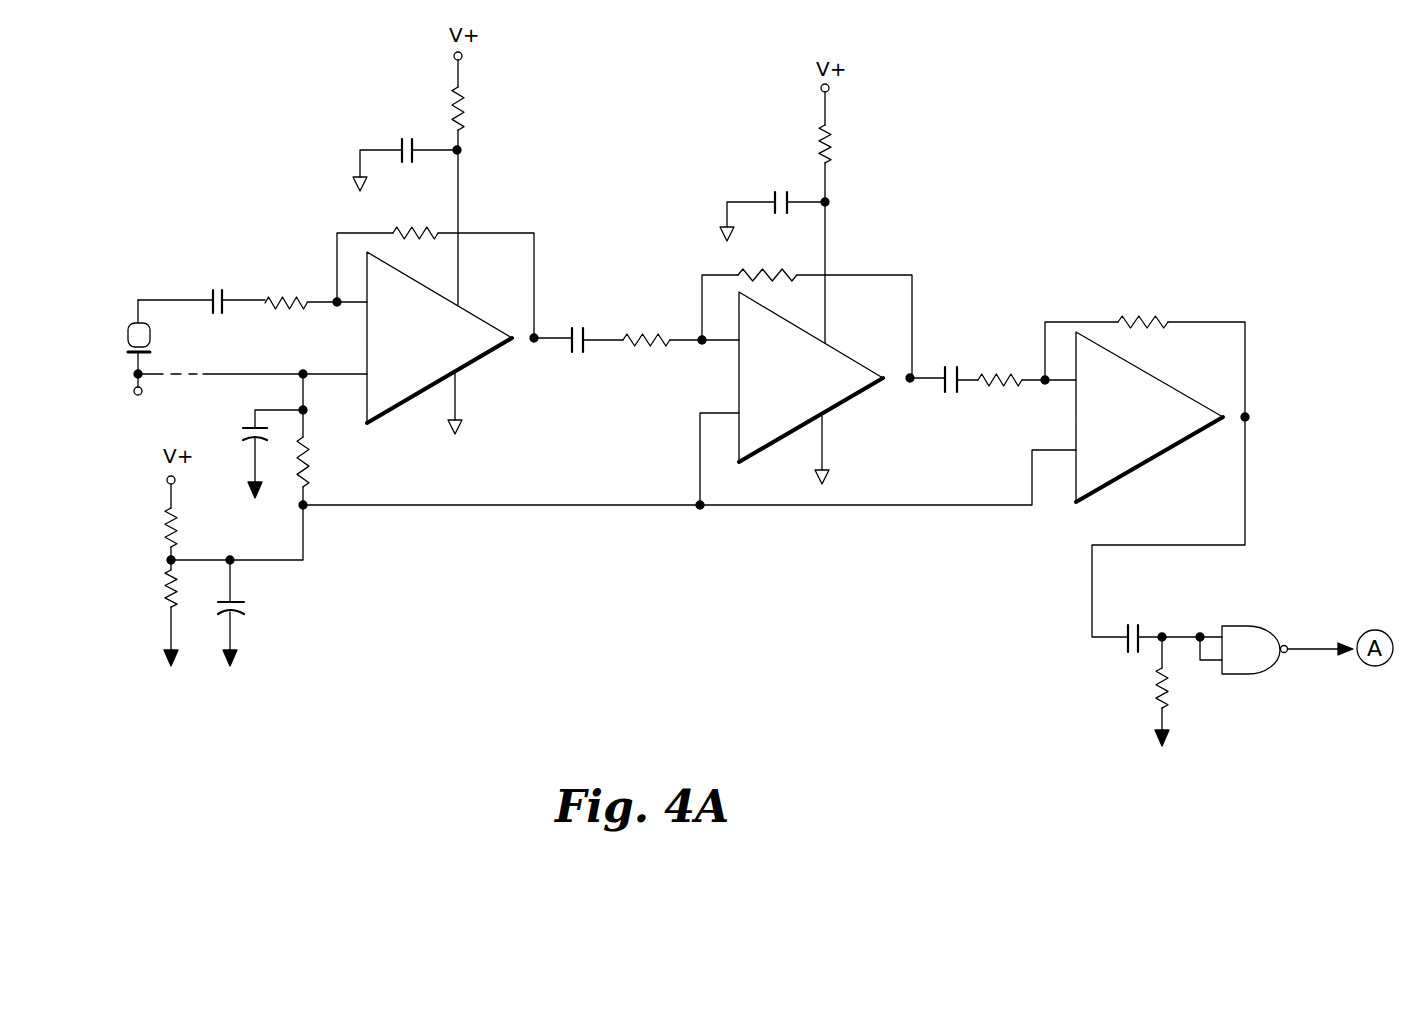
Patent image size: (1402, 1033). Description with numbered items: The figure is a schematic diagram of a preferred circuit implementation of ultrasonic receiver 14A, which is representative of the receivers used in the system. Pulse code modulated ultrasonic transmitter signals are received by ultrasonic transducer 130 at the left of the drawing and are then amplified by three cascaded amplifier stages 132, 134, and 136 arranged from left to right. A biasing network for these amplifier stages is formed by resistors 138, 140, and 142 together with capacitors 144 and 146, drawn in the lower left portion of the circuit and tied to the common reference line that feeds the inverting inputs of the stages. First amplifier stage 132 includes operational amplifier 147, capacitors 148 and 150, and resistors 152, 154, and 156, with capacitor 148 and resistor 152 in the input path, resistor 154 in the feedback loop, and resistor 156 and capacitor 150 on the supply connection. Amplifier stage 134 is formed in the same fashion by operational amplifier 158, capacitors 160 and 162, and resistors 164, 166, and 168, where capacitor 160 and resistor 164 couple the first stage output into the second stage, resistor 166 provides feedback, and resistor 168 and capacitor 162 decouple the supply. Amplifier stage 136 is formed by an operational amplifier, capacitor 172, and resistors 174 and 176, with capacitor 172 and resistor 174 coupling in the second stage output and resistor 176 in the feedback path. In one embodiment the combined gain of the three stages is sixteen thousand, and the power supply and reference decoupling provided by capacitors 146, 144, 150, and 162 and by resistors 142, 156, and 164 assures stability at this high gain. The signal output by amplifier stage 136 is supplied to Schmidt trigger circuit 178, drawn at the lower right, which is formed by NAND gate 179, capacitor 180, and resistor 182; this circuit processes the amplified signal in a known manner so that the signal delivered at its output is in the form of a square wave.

The ultrasonic receiver 14A is at (1002, 181).
The ultrasonic transducer 130 is at (124, 322).
The first amplifier stage 132 is at (457, 243).
The amplifier stage 134 is at (826, 296).
The amplifier stage 136 is at (1147, 380).
The resistor 138 is at (177, 526).
The resistor 140 is at (164, 587).
The resistor 142 is at (309, 466).
The capacitor 144 is at (243, 432).
The capacitor 146 is at (244, 600).
The operational amplifier 147 is at (470, 362).
The capacitor 148 is at (224, 296).
The capacitor 150 is at (402, 142).
The resistor 152 is at (288, 300).
The resistor 154 is at (426, 233).
The resistor 156 is at (461, 109).
The operational amplifier 158 is at (843, 405).
The capacitor 160 is at (584, 328).
The capacitor 162 is at (774, 198).
The resistor 164 is at (660, 338).
The resistor 166 is at (778, 276).
The resistor 168 is at (830, 146).
The capacitor 172 is at (958, 366).
The resistor 174 is at (984, 386).
The resistor 176 is at (1140, 322).
The Schmidt trigger circuit 178 is at (1256, 635).
The NAND gate 179 is at (1240, 675).
The capacitor 180 is at (1142, 625).
The resistor 182 is at (1156, 692).